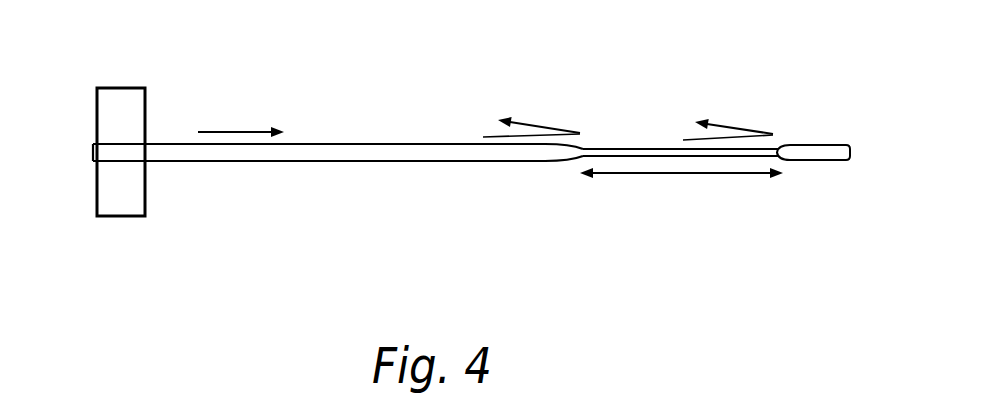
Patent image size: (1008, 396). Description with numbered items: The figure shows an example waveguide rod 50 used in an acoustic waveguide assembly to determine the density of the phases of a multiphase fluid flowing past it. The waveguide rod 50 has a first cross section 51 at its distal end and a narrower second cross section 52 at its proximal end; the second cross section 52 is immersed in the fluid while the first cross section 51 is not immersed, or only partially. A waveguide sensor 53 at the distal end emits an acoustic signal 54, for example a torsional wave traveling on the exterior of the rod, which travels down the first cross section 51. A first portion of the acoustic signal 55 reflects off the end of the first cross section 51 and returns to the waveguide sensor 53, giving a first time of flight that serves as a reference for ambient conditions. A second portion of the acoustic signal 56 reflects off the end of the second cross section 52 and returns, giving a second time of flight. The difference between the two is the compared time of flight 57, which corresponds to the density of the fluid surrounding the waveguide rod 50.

The waveguide rod 50 is at (430, 77).
The first cross section 51 is at (398, 161).
The second cross section 52 is at (781, 140).
The waveguide sensor 53 is at (108, 112).
The acoustic signal 54 is at (222, 131).
The first portion of the acoustic signal 55 is at (547, 124).
The second portion of the acoustic signal 56 is at (753, 125).
The compared time of flight 57 is at (652, 177).